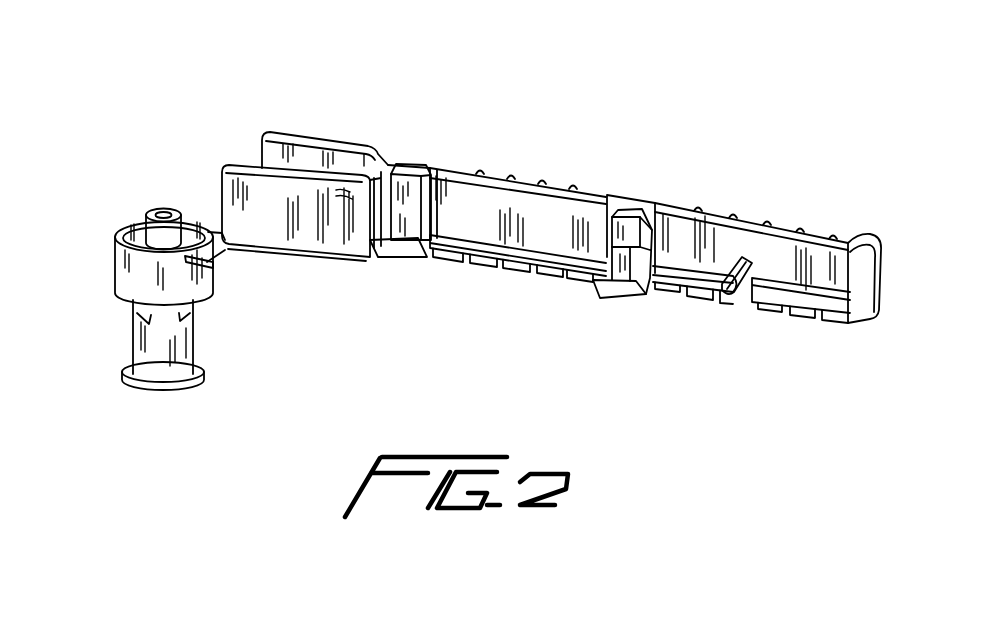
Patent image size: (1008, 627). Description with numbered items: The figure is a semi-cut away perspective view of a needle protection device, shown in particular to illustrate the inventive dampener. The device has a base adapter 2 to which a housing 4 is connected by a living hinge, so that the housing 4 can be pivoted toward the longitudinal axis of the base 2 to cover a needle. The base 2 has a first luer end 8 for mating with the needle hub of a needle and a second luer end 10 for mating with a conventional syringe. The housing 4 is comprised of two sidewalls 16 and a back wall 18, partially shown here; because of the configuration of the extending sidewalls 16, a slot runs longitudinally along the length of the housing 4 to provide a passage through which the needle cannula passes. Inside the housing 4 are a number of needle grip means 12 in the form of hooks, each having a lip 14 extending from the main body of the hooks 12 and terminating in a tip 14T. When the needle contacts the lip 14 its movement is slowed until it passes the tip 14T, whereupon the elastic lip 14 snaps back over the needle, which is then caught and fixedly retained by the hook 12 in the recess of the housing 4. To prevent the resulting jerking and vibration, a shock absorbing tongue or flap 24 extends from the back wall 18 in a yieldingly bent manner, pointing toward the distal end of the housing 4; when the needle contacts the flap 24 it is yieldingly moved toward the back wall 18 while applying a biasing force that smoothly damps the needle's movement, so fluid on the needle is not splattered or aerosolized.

The base adapter 2 is at (197, 355).
The housing 4 is at (495, 310).
The first luer end 8 is at (150, 209).
The second luer end 10 is at (125, 378).
The needle grip means 12 is at (425, 167).
The lip 14 is at (392, 190).
The tip of lip 14T is at (385, 235).
The sidewalls 16 is at (787, 247).
The back wall 18 is at (775, 312).
The tongue or flap 24 is at (730, 263).